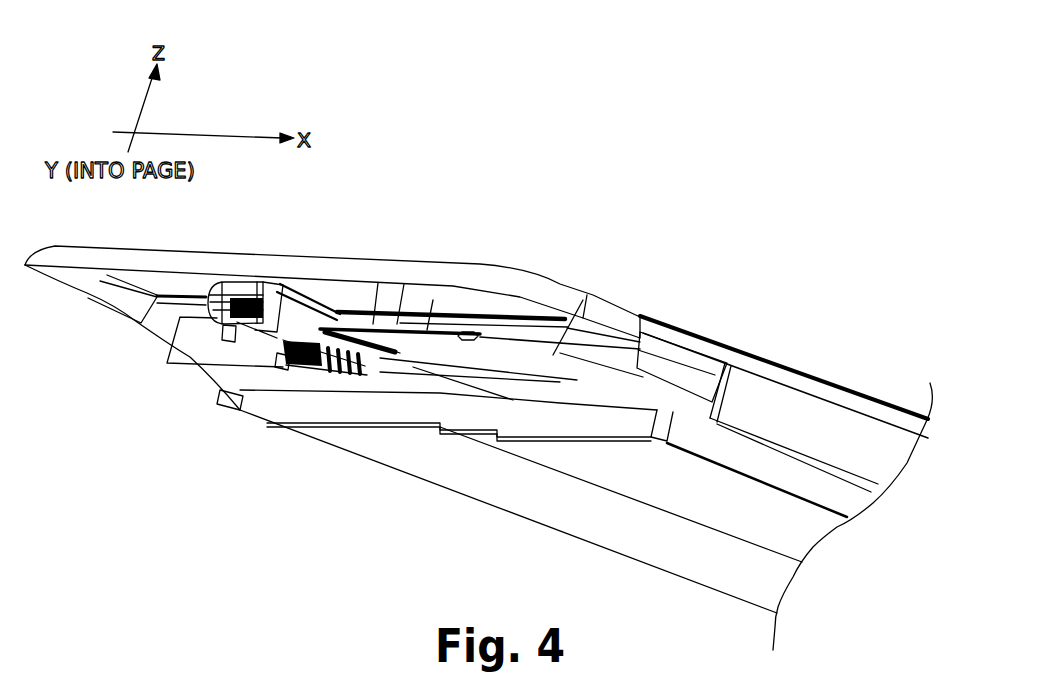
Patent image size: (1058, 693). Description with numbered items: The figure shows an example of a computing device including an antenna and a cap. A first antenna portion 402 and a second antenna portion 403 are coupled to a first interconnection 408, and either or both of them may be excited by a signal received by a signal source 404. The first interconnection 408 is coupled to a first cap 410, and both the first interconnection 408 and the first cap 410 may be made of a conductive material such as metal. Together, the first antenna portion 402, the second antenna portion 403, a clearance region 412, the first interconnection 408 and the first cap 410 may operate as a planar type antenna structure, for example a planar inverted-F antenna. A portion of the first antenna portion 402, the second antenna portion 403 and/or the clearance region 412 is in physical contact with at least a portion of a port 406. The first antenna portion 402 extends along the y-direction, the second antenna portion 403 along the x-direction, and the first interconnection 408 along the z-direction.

The first antenna portion 402 is at (588, 295).
The second antenna portion 403 is at (427, 330).
The signal source 404 is at (395, 358).
The port 406 is at (235, 330).
The first interconnection 408 is at (390, 300).
The first cap 410 is at (511, 282).
The clearance region 412 is at (533, 375).